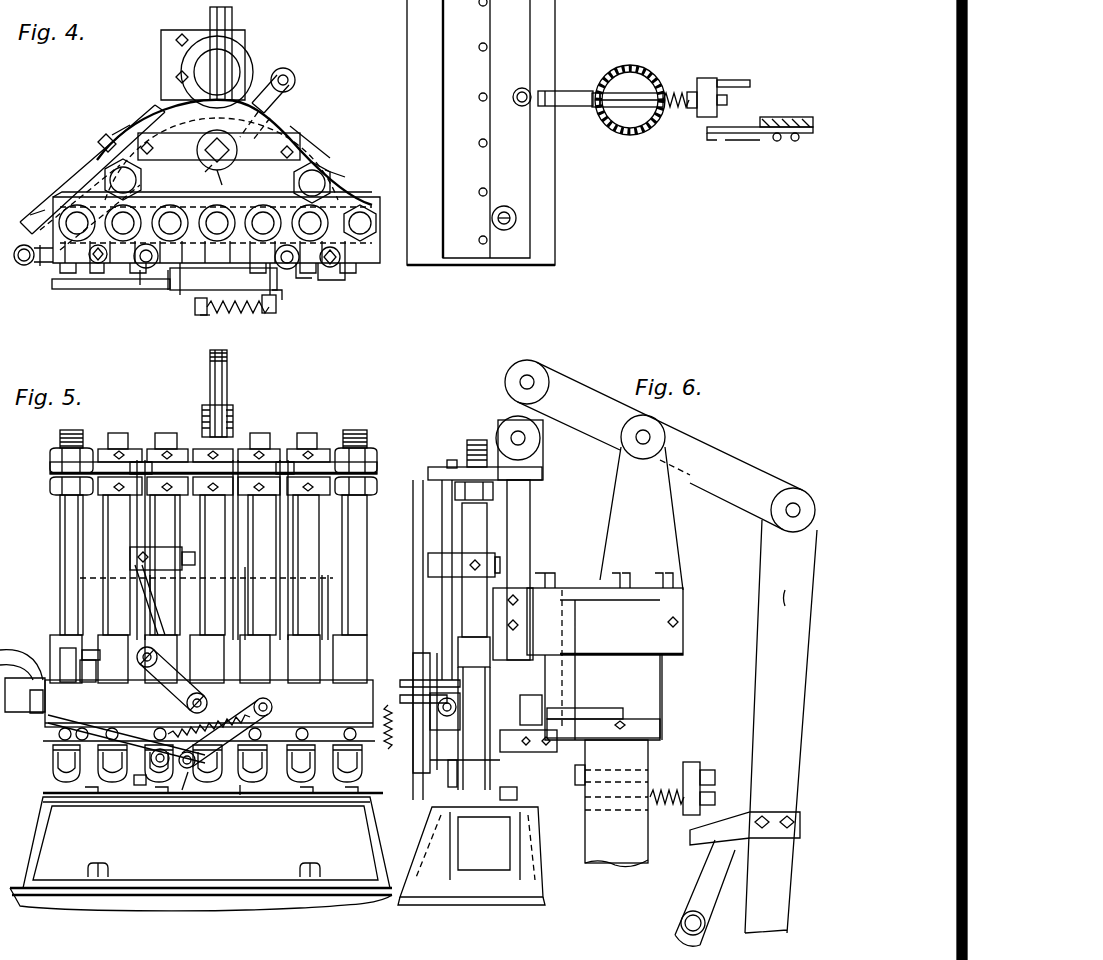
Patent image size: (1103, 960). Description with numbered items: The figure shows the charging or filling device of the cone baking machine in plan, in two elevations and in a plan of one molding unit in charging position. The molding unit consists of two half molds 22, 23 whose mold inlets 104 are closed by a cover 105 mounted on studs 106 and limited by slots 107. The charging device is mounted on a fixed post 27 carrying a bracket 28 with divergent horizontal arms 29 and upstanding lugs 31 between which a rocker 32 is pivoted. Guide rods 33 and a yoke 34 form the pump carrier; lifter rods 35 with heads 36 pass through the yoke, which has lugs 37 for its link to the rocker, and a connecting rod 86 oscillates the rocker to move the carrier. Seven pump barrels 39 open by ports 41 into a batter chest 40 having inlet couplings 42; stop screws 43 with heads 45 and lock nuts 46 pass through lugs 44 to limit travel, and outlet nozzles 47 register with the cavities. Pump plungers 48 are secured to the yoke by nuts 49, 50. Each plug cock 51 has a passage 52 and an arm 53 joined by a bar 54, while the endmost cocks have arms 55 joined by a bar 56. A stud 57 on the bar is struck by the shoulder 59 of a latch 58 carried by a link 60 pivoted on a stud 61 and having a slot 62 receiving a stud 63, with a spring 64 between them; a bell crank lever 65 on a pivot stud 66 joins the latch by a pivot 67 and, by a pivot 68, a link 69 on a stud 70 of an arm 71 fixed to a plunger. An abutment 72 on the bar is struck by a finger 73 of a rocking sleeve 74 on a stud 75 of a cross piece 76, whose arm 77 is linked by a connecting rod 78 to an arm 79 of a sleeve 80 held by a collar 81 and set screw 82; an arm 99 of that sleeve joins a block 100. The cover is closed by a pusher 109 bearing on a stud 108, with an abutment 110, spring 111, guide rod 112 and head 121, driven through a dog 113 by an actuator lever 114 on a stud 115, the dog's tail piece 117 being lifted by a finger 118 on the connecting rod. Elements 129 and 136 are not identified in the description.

In FIG. 6, the half mold 22 is at (430, 900).
In FIG. 6, the half mold 23 is at (518, 900).
In FIG. 4, the fixed post 27 is at (240, 52).
In FIG. 7, the fixed post 27 is at (635, 66).
In FIG. 6, the fixed post 27 is at (590, 862).
In FIG. 4, the bracket 28 is at (250, 62).
In FIG. 6, the bracket 28 is at (683, 612).
In FIG. 4, the divergent horizontal arms 29 is at (290, 126).
In FIG. 6, the divergent horizontal arms 29 is at (675, 670).
In FIG. 4, the upstanding lugs 31 is at (232, 24).
In FIG. 5, the upstanding lugs 31 is at (235, 408).
In FIG. 5, the rocker 32 is at (230, 372).
In FIG. 4, the guide rods 33 is at (345, 177).
In FIG. 6, the guide rods 33 is at (535, 520).
In FIG. 4, the yoke 34 is at (340, 280).
In FIG. 5, the yoke 34 is at (230, 462).
In FIG. 4, the lifter rods 35 is at (305, 278).
In FIG. 5, the lifter rods 35 is at (288, 540).
In FIG. 5, the heads 36 is at (285, 448).
In FIG. 6, the heads 36 is at (450, 465).
In FIG. 5, the lugs 37 is at (205, 415).
In FIG. 5, the pump barrels 39 is at (60, 658).
In FIG. 6, the pump barrels 39 is at (540, 655).
In FIG. 5, the batter chest 40 is at (209, 703).
In FIG. 6, the batter chest 40 is at (458, 740).
In FIG. 5, the port 41 is at (76, 671).
In FIG. 6, the port 41 is at (455, 725).
In FIG. 5, the inlet couplings 42 is at (18, 625).
In FIG. 6, the inlet couplings 42 is at (520, 640).
In FIG. 5, the adjustable stop screws 43 is at (98, 668).
In FIG. 4, the lugs 44 is at (360, 195).
In FIG. 5, the lugs 44 is at (390, 630).
In FIG. 5, the heads 45 is at (362, 640).
In FIG. 6, the heads 45 is at (474, 713).
In FIG. 5, the lock nuts 46 is at (373, 692).
In FIG. 5, the outlet nozzles 47 is at (345, 790).
In FIG. 6, the outlet nozzles 47 is at (450, 785).
In FIG. 5, the pump plungers 48 is at (360, 535).
In FIG. 6, the pump plungers 48 is at (470, 600).
In FIG. 5, the securing nut 49 is at (362, 448).
In FIG. 6, the securing nut 49 is at (500, 640).
In FIG. 5, the securing nut 50 is at (377, 490).
In FIG. 6, the securing nut 50 is at (495, 488).
In FIG. 5, the plug cock 51 is at (255, 790).
In FIG. 6, the plug cock 51 is at (680, 505).
In FIG. 6, the passage 52 is at (720, 440).
In FIG. 5, the arm 53 is at (310, 782).
In FIG. 5, the bar 54 is at (262, 790).
In FIG. 6, the bar 54 is at (435, 467).
In FIG. 4, the arm 55 is at (345, 180).
In FIG. 5, the arm 55 is at (385, 520).
In FIG. 6, the arm 55 is at (527, 770).
In FIG. 6, the bar 56 is at (528, 747).
In FIG. 5, the stud 57 is at (80, 735).
In FIG. 6, the stud 57 is at (555, 448).
In FIG. 4, the latch 58 is at (111, 297).
In FIG. 5, the latch 58 is at (210, 378).
In FIG. 5, the shoulder 59 is at (50, 738).
In FIG. 6, the shoulder 59 is at (505, 392).
In FIG. 4, the link 60 is at (282, 295).
In FIG. 5, the link 60 is at (235, 716).
In FIG. 4, the stud 61 is at (270, 312).
In FIG. 5, the stud 61 is at (272, 710).
In FIG. 5, the slot 62 is at (183, 790).
In FIG. 4, the stud 63 is at (205, 315).
In FIG. 5, the stud 63 is at (195, 790).
In FIG. 4, the spring 64 is at (240, 314).
In FIG. 5, the spring 64 is at (360, 780).
In FIG. 4, the bell crank lever 65 is at (200, 305).
In FIG. 5, the bell crank lever 65 is at (190, 700).
In FIG. 4, the pivot stud 66 is at (218, 290).
In FIG. 5, the pivot stud 66 is at (175, 720).
In FIG. 4, the pivot 67 is at (172, 288).
In FIG. 5, the pivot 67 is at (140, 785).
In FIG. 5, the pivot 68 is at (145, 690).
In FIG. 4, the link 69 is at (140, 285).
In FIG. 5, the link 69 is at (160, 592).
In FIG. 5, the stud 70 is at (130, 554).
In FIG. 6, the stud 70 is at (415, 560).
In FIG. 5, the arm 71 is at (165, 560).
In FIG. 6, the arm 71 is at (455, 555).
In FIG. 4, the abutment 72 is at (204, 173).
In FIG. 6, the abutment 72 is at (520, 710).
In FIG. 4, the finger 73 is at (228, 165).
In FIG. 6, the finger 73 is at (575, 680).
In FIG. 4, the rocking sleeve 74 is at (228, 190).
In FIG. 6, the rocking sleeve 74 is at (575, 775).
In FIG. 6, the stud 75 is at (600, 690).
In FIG. 4, the cross piece 76 is at (190, 135).
In FIG. 5, the cross piece 76 is at (240, 570).
In FIG. 6, the cross piece 76 is at (560, 580).
In FIG. 6, the arm 77 is at (616, 801).
In FIG. 4, the connecting rod 78 is at (288, 100).
In FIG. 6, the connecting rod 78 is at (603, 714).
In FIG. 4, the arm 79 is at (292, 80).
In FIG. 5, the arm 79 is at (325, 575).
In FIG. 6, the arm 79 is at (628, 718).
In FIG. 6, the sleeve 80 is at (660, 700).
In FIG. 6, the collar 81 is at (662, 725).
In FIG. 6, the set screw 82 is at (631, 752).
In FIG. 7, the connecting rod 86 is at (782, 117).
In FIG. 6, the connecting rod 86 is at (765, 650).
In FIG. 4, the arm 99 is at (120, 135).
In FIG. 6, the block 100 is at (471, 856).
In FIG. 7, the mold inlets 104 is at (512, 172).
In FIG. 7, the cover 105 is at (493, 112).
In FIG. 5, the cover 105 is at (45, 800).
In FIG. 6, the cover 105 is at (492, 843).
In FIG. 7, the studs 106 is at (510, 218).
In FIG. 7, the slots 107 is at (515, 218).
In FIG. 7, the stud 108 is at (528, 88).
In FIG. 7, the pusher 109 is at (575, 107).
In FIG. 6, the pusher 109 is at (530, 805).
In FIG. 7, the abutment 110 is at (675, 115).
In FIG. 6, the abutment 110 is at (695, 765).
In FIG. 7, the spring 111 is at (673, 90).
In FIG. 6, the spring 111 is at (648, 812).
In FIG. 7, the guide rod 112 is at (655, 128).
In FIG. 6, the guide rod 112 is at (660, 785).
In FIG. 6, the dog 113 is at (705, 815).
In FIG. 7, the actuator lever 114 is at (735, 80).
In FIG. 6, the actuator lever 114 is at (690, 885).
In FIG. 7, the stud 115 is at (710, 78).
In FIG. 6, the stud 115 is at (680, 922).
In FIG. 7, the tail piece 117 is at (710, 135).
In FIG. 6, the tail piece 117 is at (693, 860).
In FIG. 7, the finger 118 is at (740, 135).
In FIG. 6, the finger 118 is at (695, 845).
In FIG. 7, the head 121 is at (597, 92).
In FIG. 6, the head 121 is at (616, 818).
In FIG. 6, the rod 129 is at (505, 830).
In FIG. 4, the rod 136 is at (55, 196).